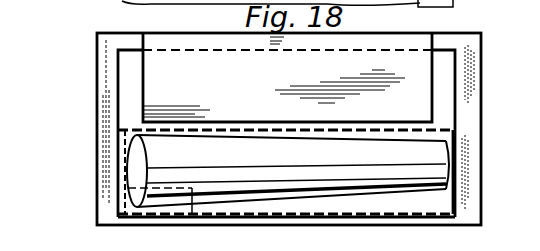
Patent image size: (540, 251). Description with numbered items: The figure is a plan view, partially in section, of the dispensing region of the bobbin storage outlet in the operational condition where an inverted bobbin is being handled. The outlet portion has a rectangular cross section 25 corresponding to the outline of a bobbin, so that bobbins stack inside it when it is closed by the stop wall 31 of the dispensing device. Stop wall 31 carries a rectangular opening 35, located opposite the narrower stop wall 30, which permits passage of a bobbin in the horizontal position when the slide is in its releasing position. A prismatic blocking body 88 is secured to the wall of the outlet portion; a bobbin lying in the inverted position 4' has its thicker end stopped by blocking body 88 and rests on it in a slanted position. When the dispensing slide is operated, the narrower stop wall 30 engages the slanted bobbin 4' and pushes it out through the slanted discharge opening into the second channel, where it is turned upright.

The inverted bobbin 4' is at (288, 152).
The rectangular cross section 25 is at (454, 138).
The narrower stop wall 30 is at (187, 58).
The stop wall 31 is at (470, 62).
The rectangular opening 35 is at (462, 100).
The blocking body 88 is at (147, 208).